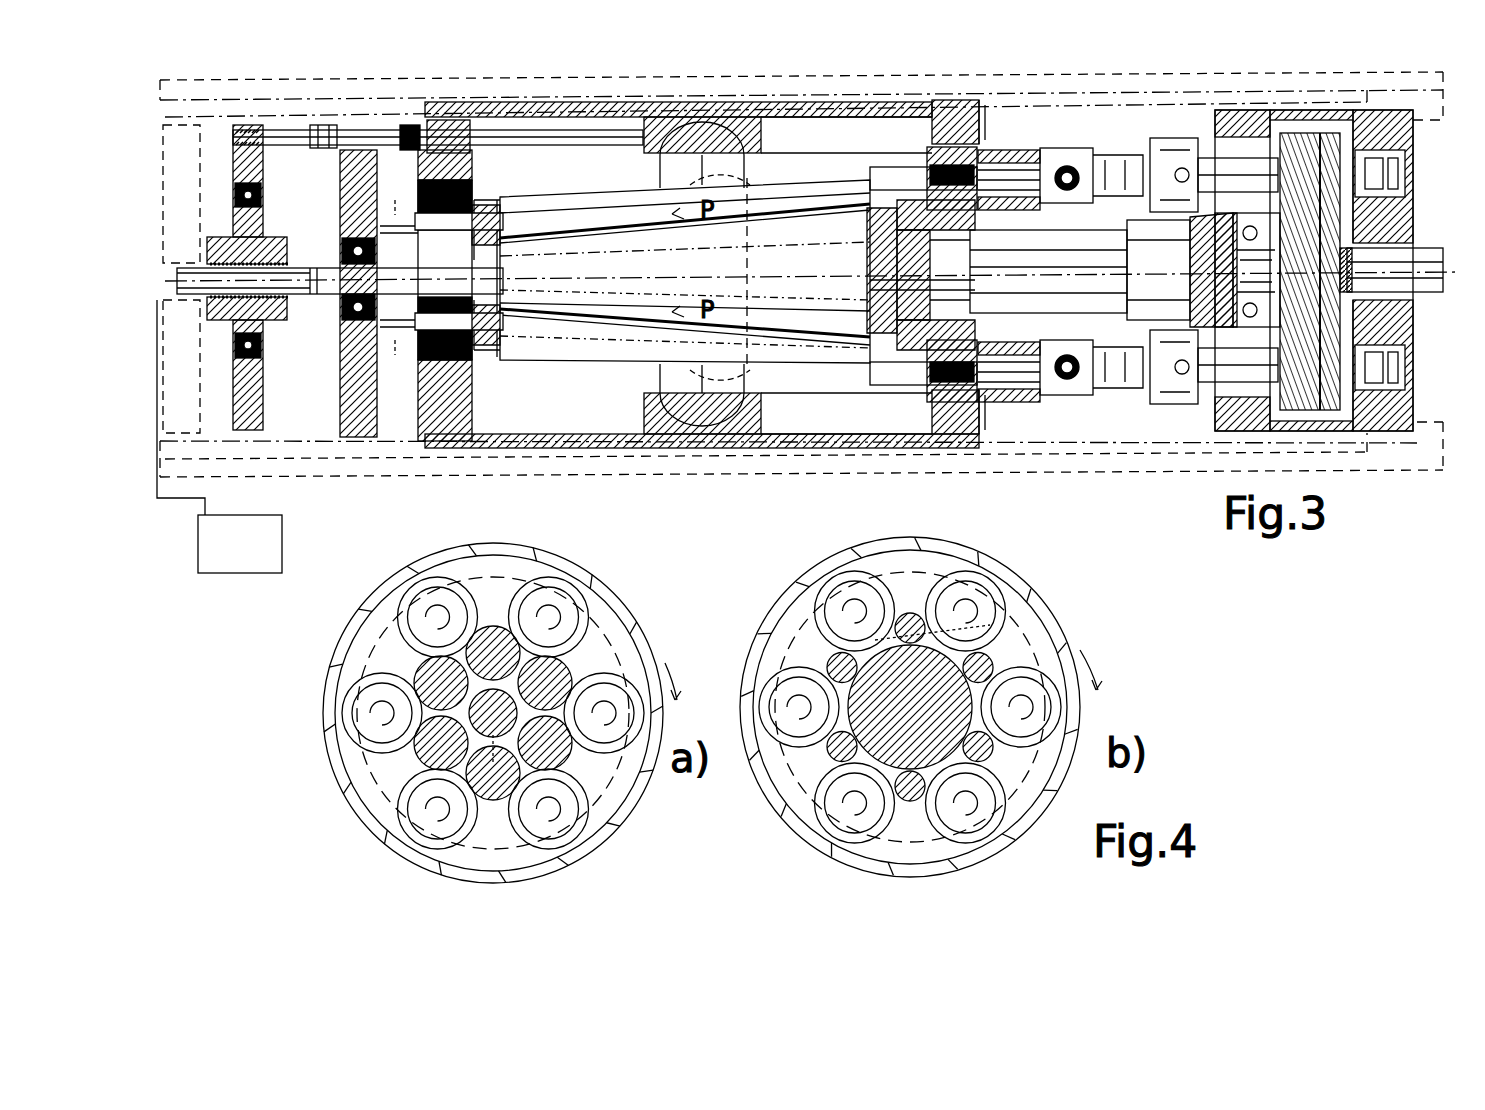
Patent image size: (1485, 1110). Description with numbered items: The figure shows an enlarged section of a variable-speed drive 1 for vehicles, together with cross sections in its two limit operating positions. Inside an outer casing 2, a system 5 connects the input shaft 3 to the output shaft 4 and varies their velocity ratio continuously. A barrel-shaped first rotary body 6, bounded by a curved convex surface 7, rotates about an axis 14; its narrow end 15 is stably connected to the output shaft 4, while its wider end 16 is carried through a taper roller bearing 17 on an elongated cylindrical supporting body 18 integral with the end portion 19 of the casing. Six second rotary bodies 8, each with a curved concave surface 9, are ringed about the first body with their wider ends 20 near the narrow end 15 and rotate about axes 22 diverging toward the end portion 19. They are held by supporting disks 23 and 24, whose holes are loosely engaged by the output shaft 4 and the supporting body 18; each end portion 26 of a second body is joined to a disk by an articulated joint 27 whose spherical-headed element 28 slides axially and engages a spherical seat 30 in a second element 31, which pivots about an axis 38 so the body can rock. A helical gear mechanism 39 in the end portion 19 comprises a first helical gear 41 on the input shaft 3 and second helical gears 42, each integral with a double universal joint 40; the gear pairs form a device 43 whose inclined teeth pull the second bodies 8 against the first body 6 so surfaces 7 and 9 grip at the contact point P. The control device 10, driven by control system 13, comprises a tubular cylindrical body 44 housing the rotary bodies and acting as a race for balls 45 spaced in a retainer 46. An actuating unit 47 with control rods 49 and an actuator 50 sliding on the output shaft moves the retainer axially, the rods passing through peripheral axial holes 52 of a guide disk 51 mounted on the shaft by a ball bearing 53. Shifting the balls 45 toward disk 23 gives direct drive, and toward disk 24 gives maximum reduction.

In FIG. 3, the variable-speed drive 1 is at (1175, 64).
In FIG. 3, the outer casing 2 is at (1178, 482).
In FIG. 3, the input shaft 3 is at (1432, 252).
In FIG. 3, the output shaft 4 is at (205, 296).
In FIG. 3, the system 5 is at (847, 433).
In FIG. 3, the first rotary body 6 is at (622, 292).
In FIG. 4, the first rotary body 6 is at (468, 720).
In FIG. 3, the curved convex surface 7 is at (792, 205).
In FIG. 4, the curved convex surface 7 is at (493, 775).
In FIG. 3, the second rotary bodies 8 is at (560, 200).
In FIG. 4, the second rotary bodies 8 is at (425, 675).
In FIG. 3, the curved concave surface 9 is at (776, 141).
In FIG. 4, the curved concave surface 9 is at (493, 620).
In FIG. 3, the control device 10 is at (640, 130).
In FIG. 3, the control system 13 is at (262, 548).
In FIG. 3, the axis 14 is at (172, 285).
In FIG. 3, the narrow end 15 is at (520, 262).
In FIG. 3, the wider end 16 is at (1010, 283).
In FIG. 3, the taper roller bearing 17 is at (867, 262).
In FIG. 3, the elongated cylindrical supporting body 18 is at (1080, 190).
In FIG. 3, the end portion 19 is at (1232, 110).
In FIG. 3, the wider ends 20 is at (508, 195).
In FIG. 3, the axes 22 is at (399, 281).
In FIG. 3, the supporting disk 23 is at (450, 441).
In FIG. 3, the supporting disk 24 is at (1008, 485).
In FIG. 3, the end portions 26 is at (418, 235).
In FIG. 3, the articulated joint 27 is at (474, 150).
In FIG. 3, the first spherical-headed element 28 is at (428, 155).
In FIG. 3, the spherical seat 30 is at (460, 275).
In FIG. 3, the second element 31 is at (490, 205).
In FIG. 3, the axis 38 is at (1015, 165).
In FIG. 3, the helical gear mechanism 39 is at (1330, 110).
In FIG. 3, the double universal joints 40 is at (1107, 132).
In FIG. 3, the first helical gear 41 is at (1360, 300).
In FIG. 3, the second helical gear 42 is at (1292, 133).
In FIG. 3, the device 43 is at (1345, 228).
In FIG. 3, the tubular cylindrical body 44 is at (660, 108).
In FIG. 4, the tubular cylindrical body 44 is at (548, 566).
In FIG. 3, the balls 45 is at (747, 271).
In FIG. 4, the balls 45 is at (620, 693).
In FIG. 3, the retainer 46 is at (660, 434).
In FIG. 3, the actuating unit 47 is at (301, 118).
In FIG. 3, the control rods 49 is at (448, 120).
In FIG. 3, the actuator 50 is at (268, 190).
In FIG. 3, the guide disk 51 is at (362, 437).
In FIG. 3, the peripheral axial holes 52 is at (332, 150).
In FIG. 3, the ball bearing 53 is at (340, 320).